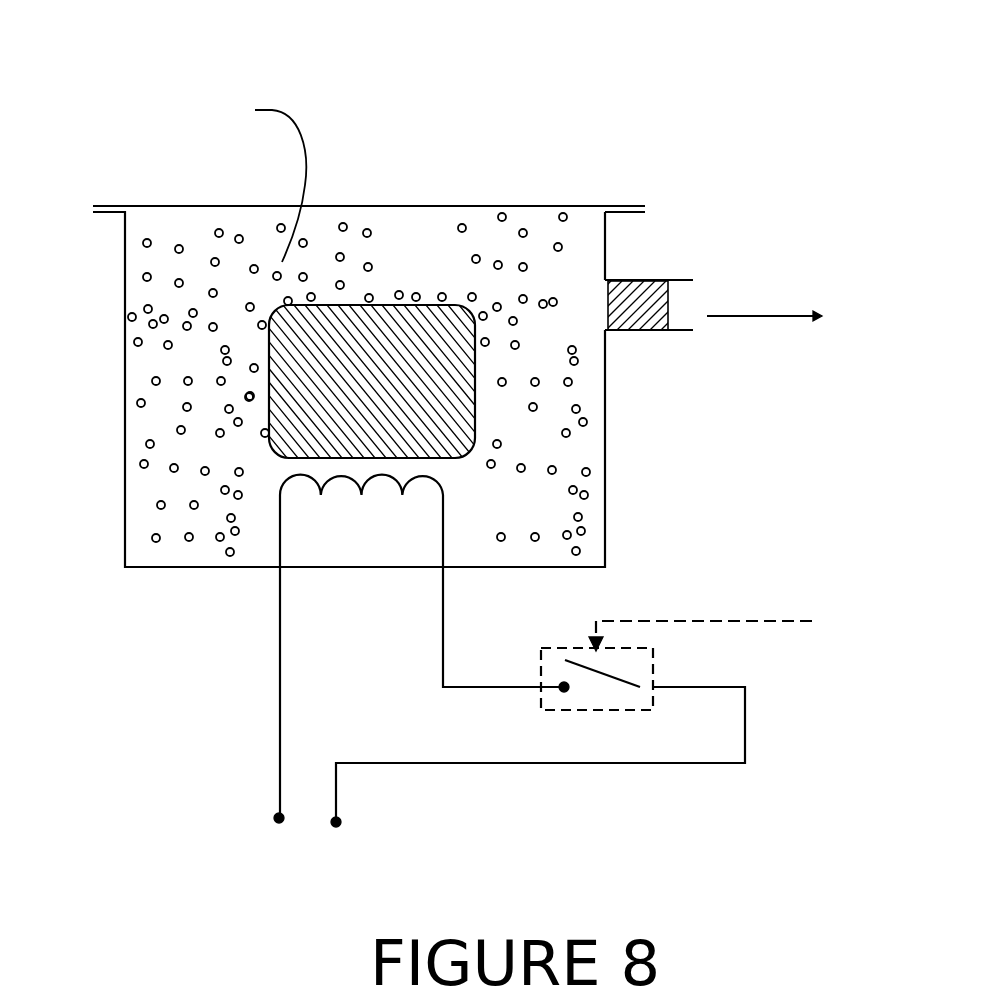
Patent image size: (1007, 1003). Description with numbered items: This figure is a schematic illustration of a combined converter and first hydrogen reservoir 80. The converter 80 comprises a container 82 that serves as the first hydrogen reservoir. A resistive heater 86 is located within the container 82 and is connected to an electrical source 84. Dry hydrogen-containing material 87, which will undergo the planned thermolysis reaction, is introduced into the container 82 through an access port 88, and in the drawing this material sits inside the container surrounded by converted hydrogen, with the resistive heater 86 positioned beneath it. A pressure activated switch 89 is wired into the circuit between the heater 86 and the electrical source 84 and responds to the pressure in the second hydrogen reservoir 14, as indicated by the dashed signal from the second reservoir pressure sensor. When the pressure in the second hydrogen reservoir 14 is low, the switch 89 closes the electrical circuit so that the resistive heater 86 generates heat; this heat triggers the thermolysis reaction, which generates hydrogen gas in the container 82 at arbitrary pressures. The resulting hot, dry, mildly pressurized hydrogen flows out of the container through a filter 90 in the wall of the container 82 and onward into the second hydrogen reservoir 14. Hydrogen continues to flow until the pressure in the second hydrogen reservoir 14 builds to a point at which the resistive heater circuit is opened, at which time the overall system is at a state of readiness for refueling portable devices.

The combined converter and first hydrogen reservoir 80 is at (517, 74).
The container 82 is at (198, 567).
The electrical source 84 is at (258, 838).
The resistive heater 86 is at (443, 483).
The dry hydrogen-containing material 87 is at (450, 400).
The access port 88 is at (575, 206).
The pressure activated switch 89 is at (597, 713).
The filter 90 is at (653, 322).
The second hydrogen reservoir 14 is at (780, 271).